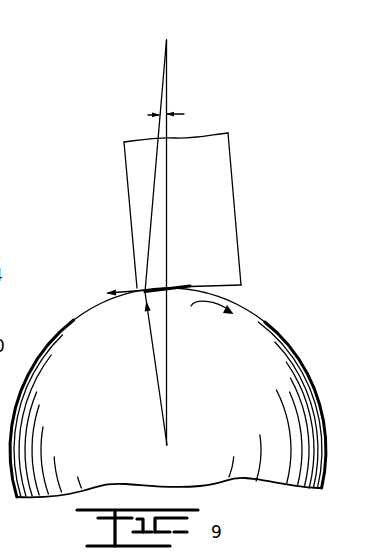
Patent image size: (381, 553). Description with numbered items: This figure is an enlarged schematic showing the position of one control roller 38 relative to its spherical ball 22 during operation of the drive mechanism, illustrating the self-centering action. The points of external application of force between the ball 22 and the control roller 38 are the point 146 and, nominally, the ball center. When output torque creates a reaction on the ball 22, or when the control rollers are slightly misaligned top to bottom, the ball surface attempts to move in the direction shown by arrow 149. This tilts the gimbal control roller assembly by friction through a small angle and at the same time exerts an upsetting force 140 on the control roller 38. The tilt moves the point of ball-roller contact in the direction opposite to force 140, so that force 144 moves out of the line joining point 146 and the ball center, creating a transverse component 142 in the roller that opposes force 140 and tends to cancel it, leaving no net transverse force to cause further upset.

The spherical ball 22 is at (263, 322).
The control roller 38 is at (200, 202).
The upsetting force 140 is at (161, 288).
The transverse force 142 is at (123, 288).
The force 144 is at (153, 347).
The point of external application of force 146 is at (166, 40).
The arrow 149 is at (191, 306).